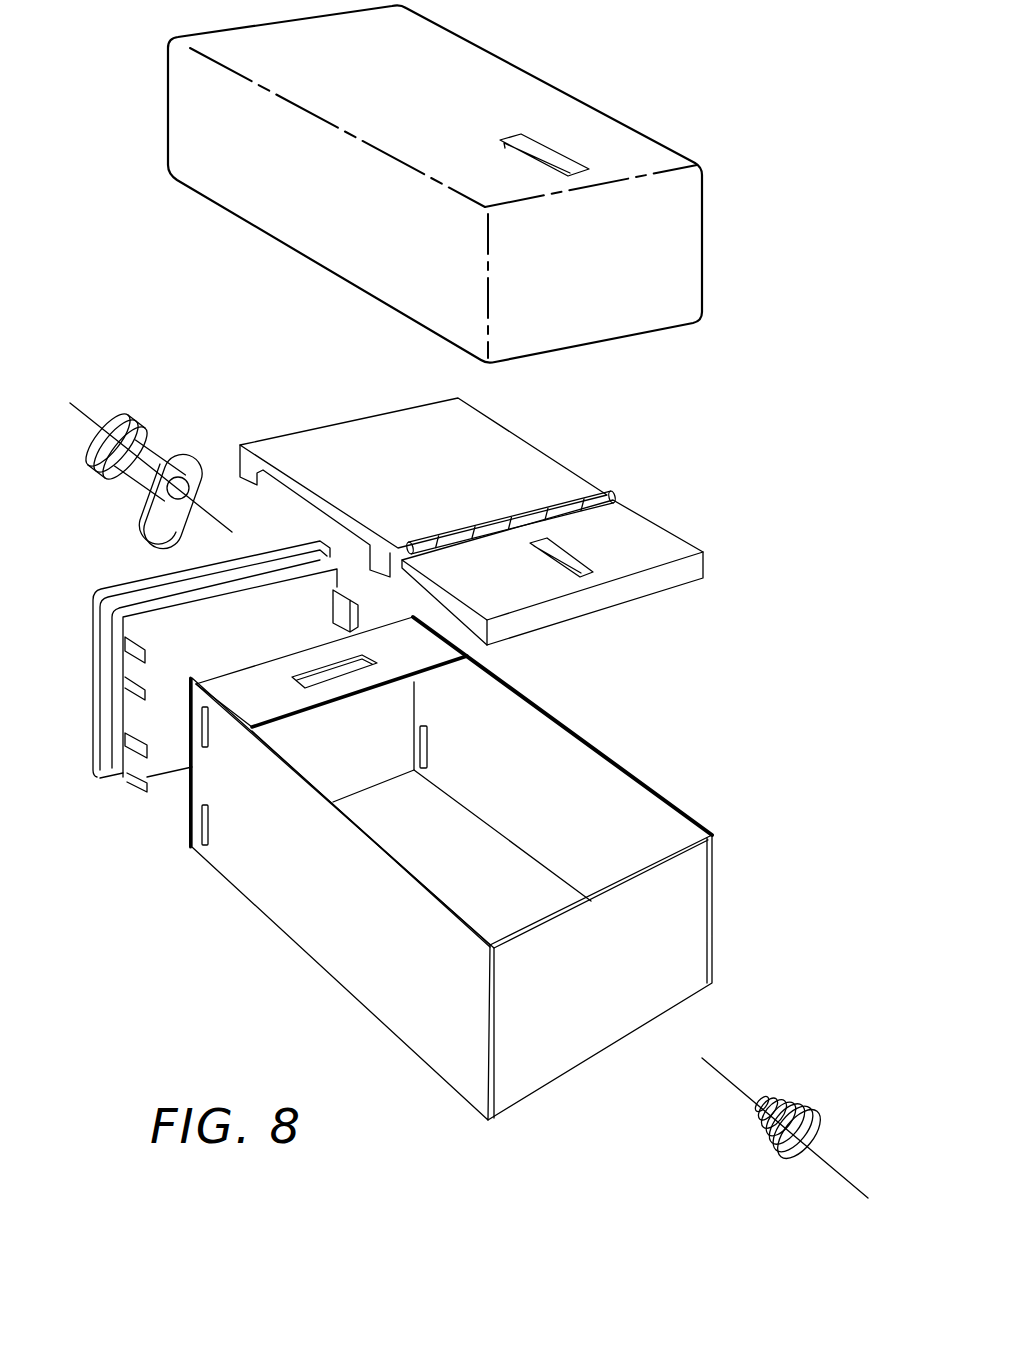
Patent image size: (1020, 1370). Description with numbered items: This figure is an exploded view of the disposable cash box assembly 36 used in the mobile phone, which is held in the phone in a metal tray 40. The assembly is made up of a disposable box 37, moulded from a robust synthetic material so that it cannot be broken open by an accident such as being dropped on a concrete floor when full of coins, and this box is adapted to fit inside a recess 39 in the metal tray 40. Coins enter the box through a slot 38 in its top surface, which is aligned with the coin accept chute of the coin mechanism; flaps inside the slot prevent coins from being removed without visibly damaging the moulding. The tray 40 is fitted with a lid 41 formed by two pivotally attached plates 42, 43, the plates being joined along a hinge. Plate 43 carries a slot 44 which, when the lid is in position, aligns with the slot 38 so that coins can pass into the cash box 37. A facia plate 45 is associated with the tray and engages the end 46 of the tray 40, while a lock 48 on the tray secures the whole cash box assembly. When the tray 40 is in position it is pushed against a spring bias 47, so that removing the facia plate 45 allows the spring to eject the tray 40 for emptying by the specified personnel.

The disposable cash box assembly 36 is at (475, 183).
The disposable box 37 is at (677, 198).
The slot 38 is at (547, 155).
The recess 39 is at (460, 851).
The metal tray 40 is at (476, 868).
The lid 41 is at (640, 477).
The plate 42 is at (510, 460).
The plate 43 is at (583, 579).
The slot 44 is at (568, 567).
The facia plate 45 is at (180, 437).
The end 46 is at (205, 897).
The spring bias 47 is at (787, 1098).
The lock 48 is at (130, 802).